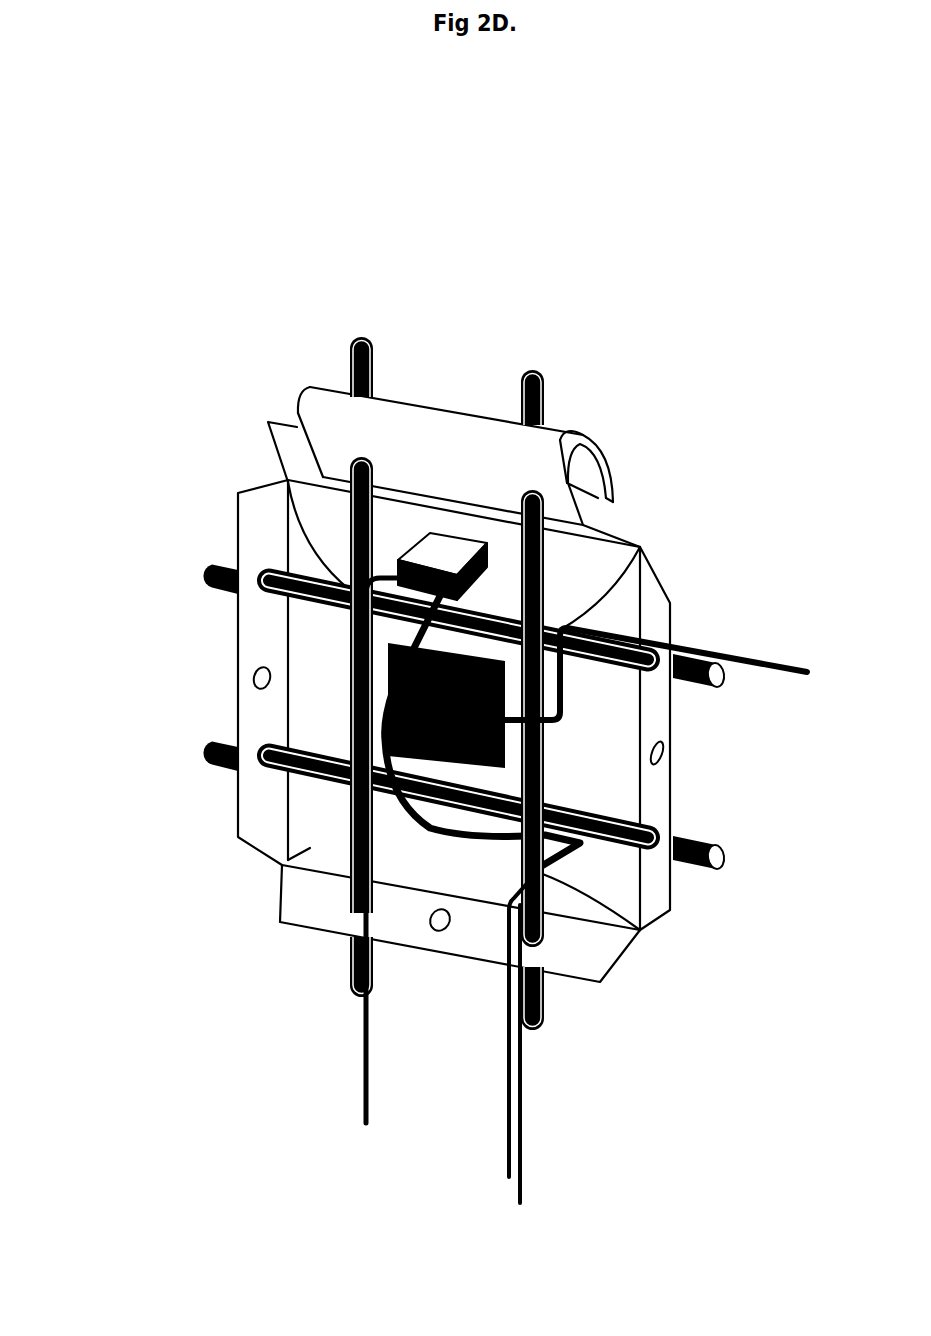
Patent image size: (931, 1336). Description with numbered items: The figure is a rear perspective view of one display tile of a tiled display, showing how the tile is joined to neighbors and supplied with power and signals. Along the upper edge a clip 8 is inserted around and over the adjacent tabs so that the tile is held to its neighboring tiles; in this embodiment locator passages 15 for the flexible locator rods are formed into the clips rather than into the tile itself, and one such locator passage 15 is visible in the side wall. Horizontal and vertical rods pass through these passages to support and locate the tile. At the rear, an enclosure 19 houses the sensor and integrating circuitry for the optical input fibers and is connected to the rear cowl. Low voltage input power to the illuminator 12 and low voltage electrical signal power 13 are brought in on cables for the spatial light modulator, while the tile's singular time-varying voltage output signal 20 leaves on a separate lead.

The clip 8 is at (612, 456).
The low voltage input power to the illuminator 12 is at (540, 1113).
The low voltage electrical signal power 13 is at (800, 652).
The locator passage 15 is at (676, 755).
The enclosure 19 is at (390, 558).
The time-varying voltage output signal 20 is at (342, 1073).